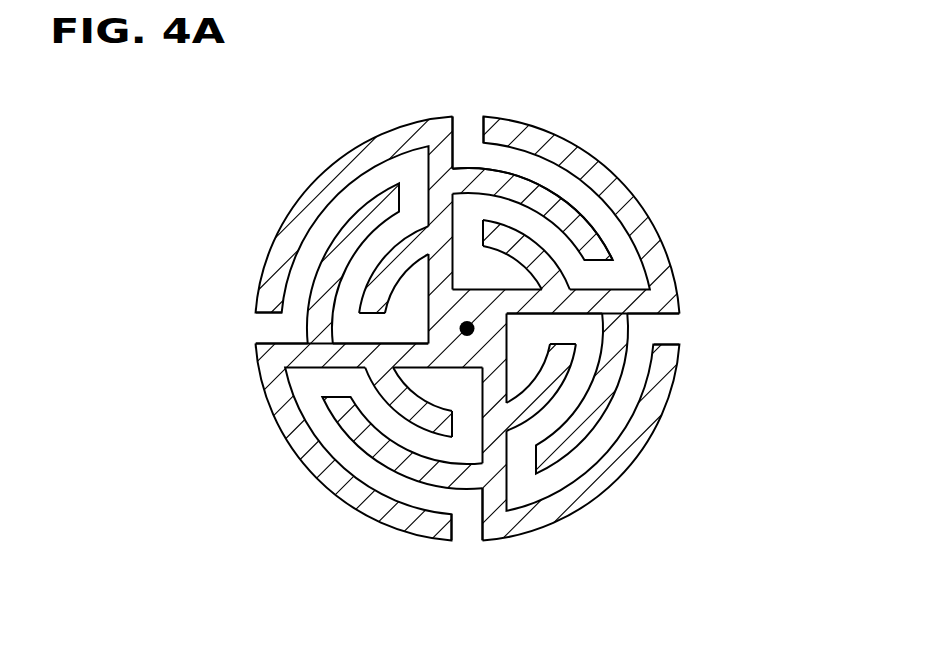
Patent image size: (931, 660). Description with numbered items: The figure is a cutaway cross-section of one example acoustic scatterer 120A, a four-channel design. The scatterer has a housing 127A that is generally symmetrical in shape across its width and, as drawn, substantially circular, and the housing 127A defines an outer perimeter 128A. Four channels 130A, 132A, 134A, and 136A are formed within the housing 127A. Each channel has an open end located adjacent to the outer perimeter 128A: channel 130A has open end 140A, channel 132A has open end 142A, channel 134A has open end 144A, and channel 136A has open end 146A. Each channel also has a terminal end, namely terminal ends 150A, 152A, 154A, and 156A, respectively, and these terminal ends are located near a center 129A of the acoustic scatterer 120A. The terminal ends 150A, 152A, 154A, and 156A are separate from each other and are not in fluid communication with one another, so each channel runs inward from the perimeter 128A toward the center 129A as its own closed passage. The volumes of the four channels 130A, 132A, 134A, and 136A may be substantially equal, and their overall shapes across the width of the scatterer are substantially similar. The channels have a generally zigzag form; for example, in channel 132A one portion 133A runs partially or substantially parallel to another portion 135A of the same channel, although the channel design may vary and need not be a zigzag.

The acoustic scatterer 120A is at (653, 123).
The housing 127A is at (262, 412).
The perimeter 128A is at (315, 190).
The center 129A is at (467, 322).
The channel 130A is at (362, 192).
The channel 132A is at (607, 222).
The portion of the channel 133A is at (585, 198).
The channel 134A is at (597, 443).
The portion of the channel 135A is at (557, 237).
The channel 136A is at (335, 442).
The open end 140A is at (260, 328).
The open end 142A is at (467, 128).
The open end 144A is at (665, 329).
The open end 146A is at (467, 532).
The terminal end 150A is at (400, 302).
The terminal end 152A is at (485, 265).
The terminal end 154A is at (523, 360).
The terminal end 156A is at (442, 398).